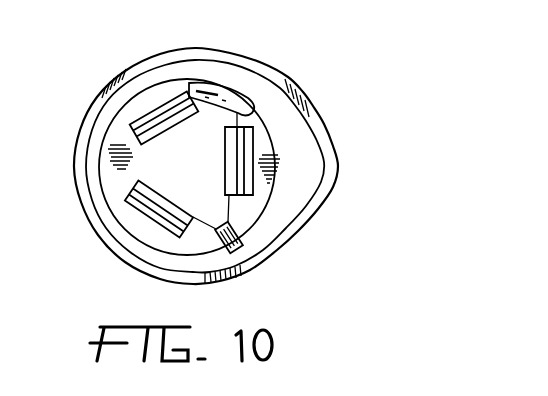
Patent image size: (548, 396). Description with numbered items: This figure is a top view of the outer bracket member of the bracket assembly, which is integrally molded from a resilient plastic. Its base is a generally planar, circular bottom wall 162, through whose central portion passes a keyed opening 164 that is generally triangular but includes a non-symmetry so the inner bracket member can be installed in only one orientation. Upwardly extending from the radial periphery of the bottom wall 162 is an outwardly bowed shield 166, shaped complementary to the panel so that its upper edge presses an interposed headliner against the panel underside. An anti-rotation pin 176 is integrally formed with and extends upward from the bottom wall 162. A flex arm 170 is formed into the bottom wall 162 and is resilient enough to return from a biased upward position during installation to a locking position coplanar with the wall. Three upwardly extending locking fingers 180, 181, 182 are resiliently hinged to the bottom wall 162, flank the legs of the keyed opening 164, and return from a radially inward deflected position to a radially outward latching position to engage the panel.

The bottom wall 162 is at (246, 213).
The keyed opening 164 is at (128, 168).
The shield 166 is at (293, 188).
The flex arm 170 is at (221, 99).
The anti-rotation pin 176 is at (241, 247).
The locking finger 180 is at (250, 152).
The locking finger 181 is at (160, 217).
The locking finger 182 is at (157, 117).